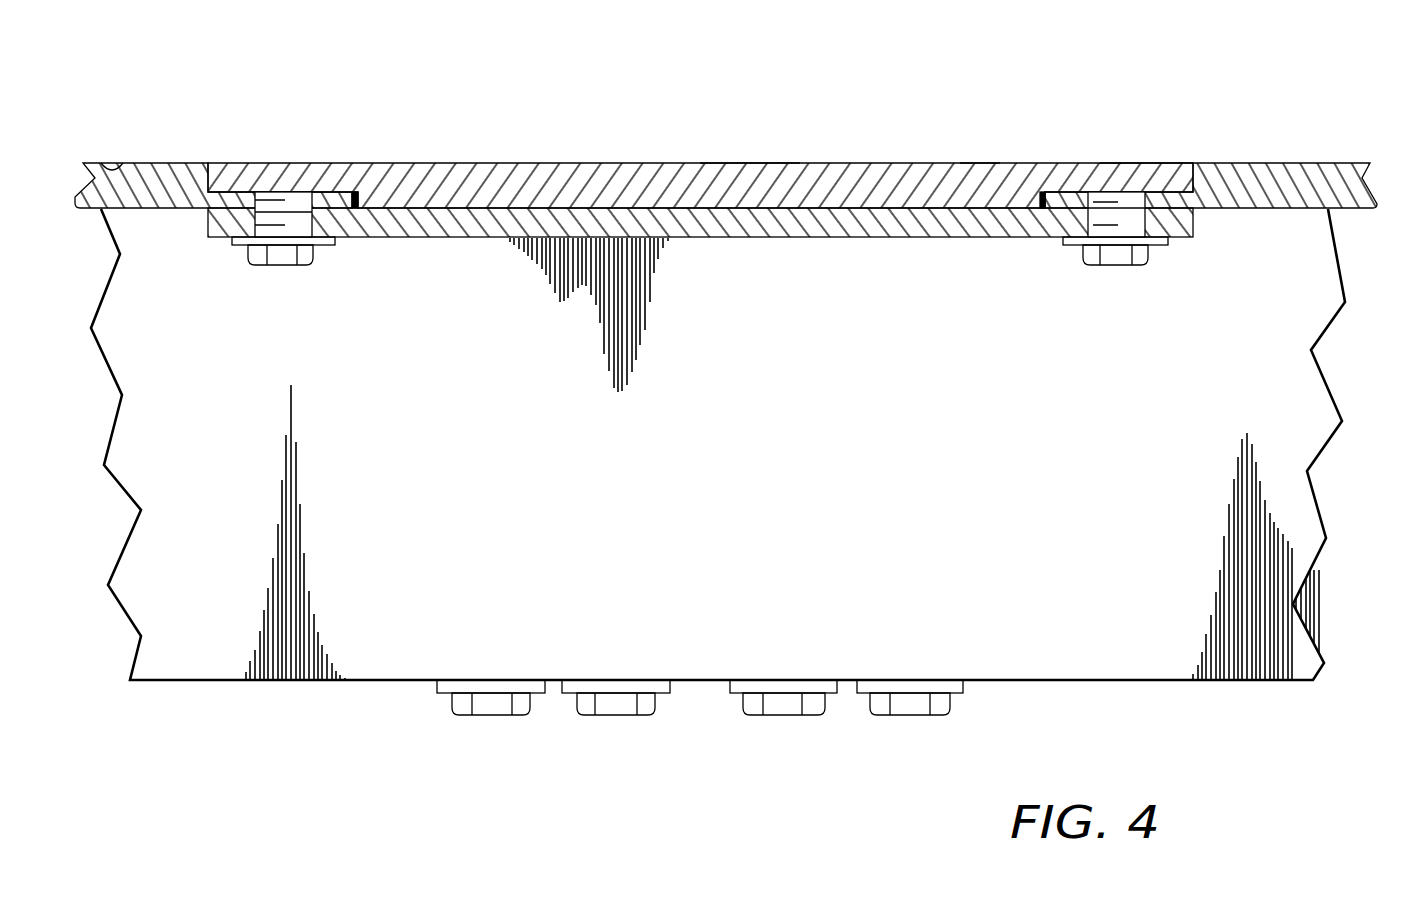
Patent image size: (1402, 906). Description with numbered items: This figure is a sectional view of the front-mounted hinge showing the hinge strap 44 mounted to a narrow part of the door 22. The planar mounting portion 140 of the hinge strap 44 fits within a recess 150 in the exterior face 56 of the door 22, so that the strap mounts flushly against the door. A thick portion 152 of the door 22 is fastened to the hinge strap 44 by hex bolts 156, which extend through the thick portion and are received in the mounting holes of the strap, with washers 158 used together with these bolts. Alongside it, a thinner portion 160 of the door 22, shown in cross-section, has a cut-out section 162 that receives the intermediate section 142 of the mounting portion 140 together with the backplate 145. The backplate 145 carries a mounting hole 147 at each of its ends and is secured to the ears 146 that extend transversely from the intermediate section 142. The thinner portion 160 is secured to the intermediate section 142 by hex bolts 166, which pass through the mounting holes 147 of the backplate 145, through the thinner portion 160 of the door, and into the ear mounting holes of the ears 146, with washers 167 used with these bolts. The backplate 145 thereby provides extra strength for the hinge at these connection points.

The door 22 is at (167, 163).
The hinge strap 44 is at (545, 163).
The exterior face 56 is at (103, 163).
The planar mounting portion 140 is at (867, 163).
The intermediate section 142 is at (747, 163).
The backplate 145 is at (790, 227).
The ears 146 is at (1125, 163).
The mounting hole 147 is at (1085, 230).
The recess 150 is at (347, 163).
The thick portion 152 is at (995, 472).
The hex bolts 156 is at (503, 717).
The washers 158 is at (437, 683).
The thinner portion 160 is at (1172, 163).
The cut-out section 162 is at (980, 163).
The hex bolts 166 is at (292, 264).
The washers 167 is at (228, 238).